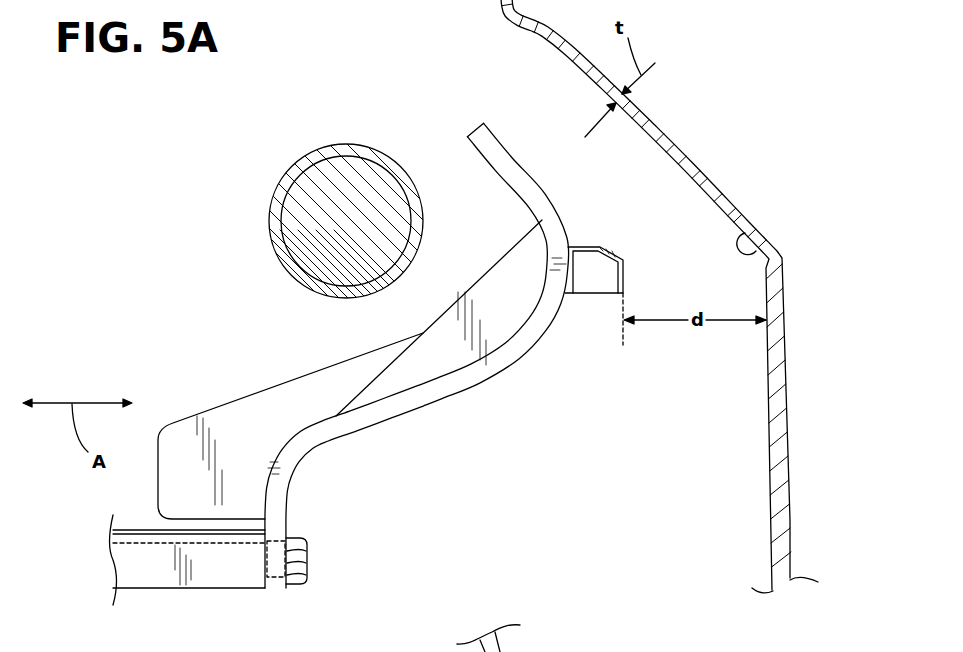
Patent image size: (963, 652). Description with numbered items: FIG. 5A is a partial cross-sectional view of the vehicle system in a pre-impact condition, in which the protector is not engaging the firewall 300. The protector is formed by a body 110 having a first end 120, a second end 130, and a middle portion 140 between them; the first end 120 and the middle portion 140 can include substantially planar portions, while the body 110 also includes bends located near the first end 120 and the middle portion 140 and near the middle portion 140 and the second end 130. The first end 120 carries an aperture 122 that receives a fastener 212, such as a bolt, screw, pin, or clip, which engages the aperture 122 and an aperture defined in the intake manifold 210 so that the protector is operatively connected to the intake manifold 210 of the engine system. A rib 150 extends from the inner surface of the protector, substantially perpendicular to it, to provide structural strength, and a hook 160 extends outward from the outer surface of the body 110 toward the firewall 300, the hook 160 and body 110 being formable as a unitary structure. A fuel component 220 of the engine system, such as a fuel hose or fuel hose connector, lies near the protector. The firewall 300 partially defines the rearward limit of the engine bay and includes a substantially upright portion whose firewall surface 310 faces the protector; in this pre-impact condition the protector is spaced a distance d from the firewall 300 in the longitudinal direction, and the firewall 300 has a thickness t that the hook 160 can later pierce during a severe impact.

The body 110 is at (464, 378).
The first end 120 is at (275, 530).
The aperture 122 is at (277, 537).
The second end 130 is at (518, 153).
The middle portion 140 is at (413, 398).
The rib 150 is at (452, 327).
The hook 160 is at (597, 282).
The intake manifold 210 is at (218, 570).
The fastener 212 is at (297, 560).
The fuel component 220 is at (290, 168).
The firewall 300 is at (725, 212).
The firewall surface 310 is at (760, 238).